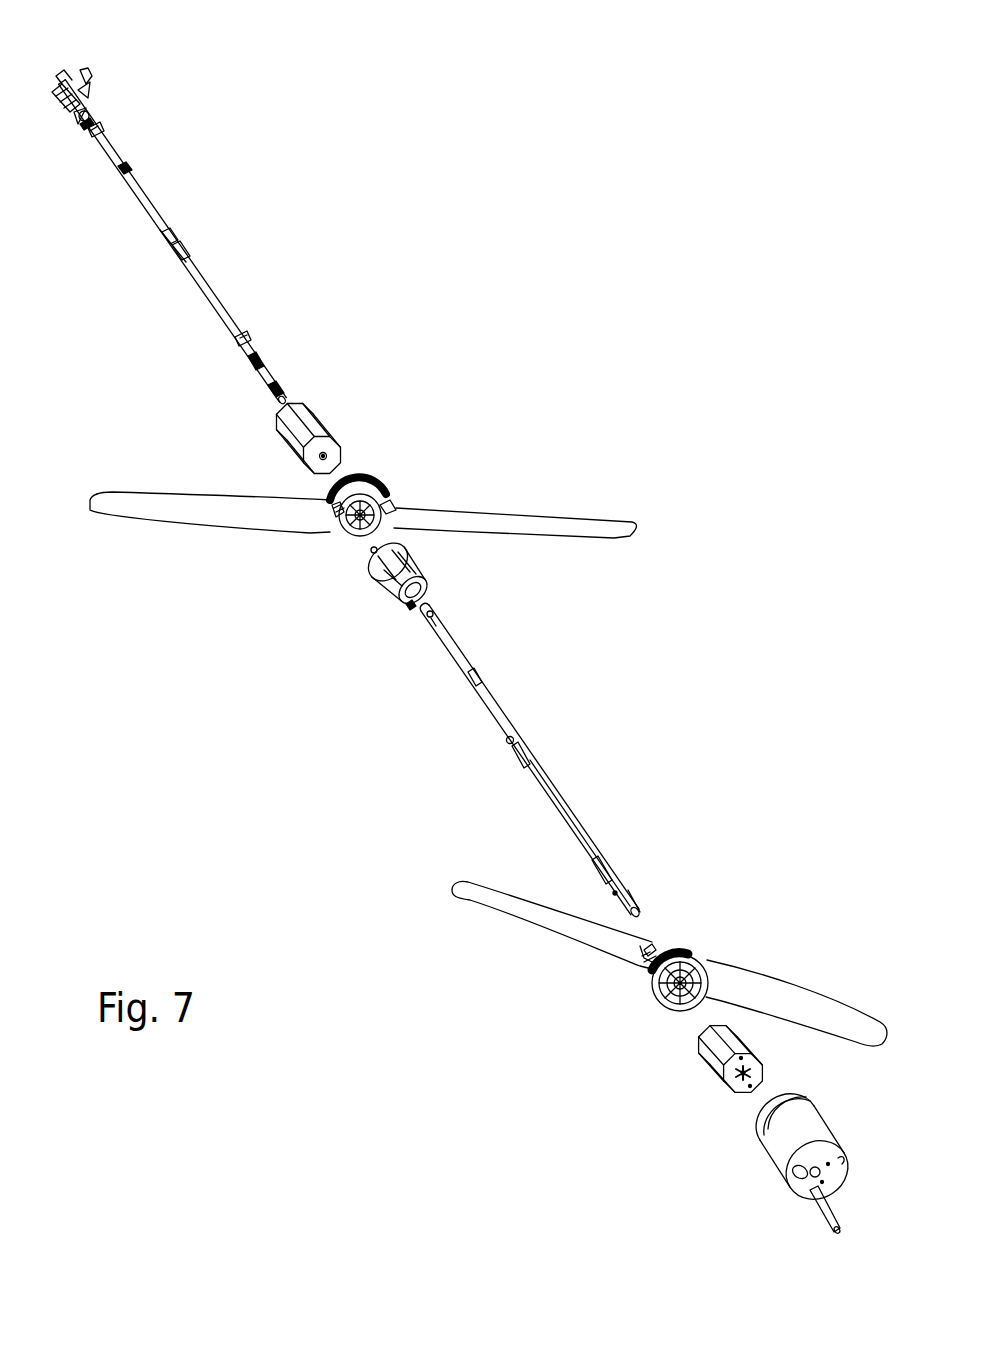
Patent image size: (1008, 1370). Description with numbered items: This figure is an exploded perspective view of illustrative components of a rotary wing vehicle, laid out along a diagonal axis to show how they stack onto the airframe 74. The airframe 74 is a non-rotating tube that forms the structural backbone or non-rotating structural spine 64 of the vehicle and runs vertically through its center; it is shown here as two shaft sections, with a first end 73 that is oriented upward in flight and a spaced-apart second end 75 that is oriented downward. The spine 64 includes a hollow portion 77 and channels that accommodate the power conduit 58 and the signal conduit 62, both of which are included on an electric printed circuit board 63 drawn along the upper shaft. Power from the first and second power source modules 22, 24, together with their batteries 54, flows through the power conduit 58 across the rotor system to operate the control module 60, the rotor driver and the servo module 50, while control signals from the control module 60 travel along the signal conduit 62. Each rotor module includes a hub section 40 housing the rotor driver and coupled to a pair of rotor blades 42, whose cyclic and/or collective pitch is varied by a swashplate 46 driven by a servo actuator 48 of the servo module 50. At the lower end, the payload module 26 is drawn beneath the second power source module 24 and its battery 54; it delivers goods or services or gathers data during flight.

The first power source module 22 is at (378, 393).
The second power source module 24 is at (663, 1041).
The payload module 26 is at (742, 1180).
The hub section 40 is at (489, 739).
The rotor blades 42 is at (158, 516).
The swashplate 46 is at (432, 548).
The servo actuator 48 is at (372, 560).
The servo module 50 is at (347, 626).
The batteries 54 is at (305, 408).
The power conduit 58 is at (188, 234).
The control module 60 is at (127, 90).
The signal conduit 62 is at (172, 328).
The electric printed circuit board 63 is at (135, 183).
The non-rotating structural spine 64 is at (530, 760).
The first end 73 is at (487, 619).
The airframe 74 is at (550, 783).
The second end 75 is at (657, 851).
The hollow portion 77 is at (420, 608).